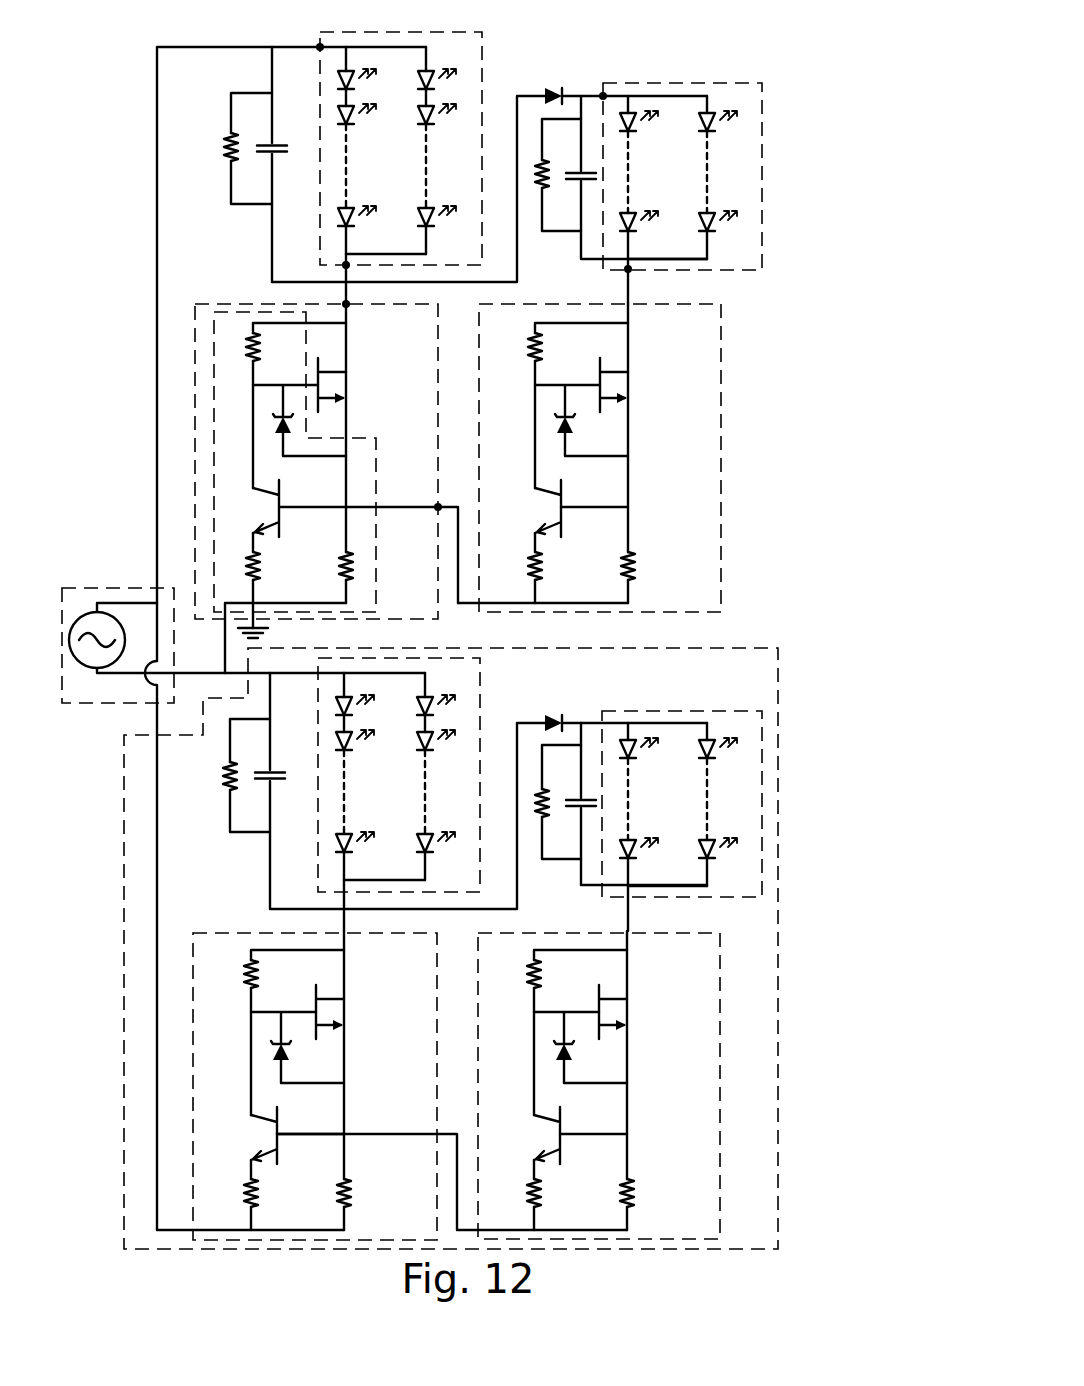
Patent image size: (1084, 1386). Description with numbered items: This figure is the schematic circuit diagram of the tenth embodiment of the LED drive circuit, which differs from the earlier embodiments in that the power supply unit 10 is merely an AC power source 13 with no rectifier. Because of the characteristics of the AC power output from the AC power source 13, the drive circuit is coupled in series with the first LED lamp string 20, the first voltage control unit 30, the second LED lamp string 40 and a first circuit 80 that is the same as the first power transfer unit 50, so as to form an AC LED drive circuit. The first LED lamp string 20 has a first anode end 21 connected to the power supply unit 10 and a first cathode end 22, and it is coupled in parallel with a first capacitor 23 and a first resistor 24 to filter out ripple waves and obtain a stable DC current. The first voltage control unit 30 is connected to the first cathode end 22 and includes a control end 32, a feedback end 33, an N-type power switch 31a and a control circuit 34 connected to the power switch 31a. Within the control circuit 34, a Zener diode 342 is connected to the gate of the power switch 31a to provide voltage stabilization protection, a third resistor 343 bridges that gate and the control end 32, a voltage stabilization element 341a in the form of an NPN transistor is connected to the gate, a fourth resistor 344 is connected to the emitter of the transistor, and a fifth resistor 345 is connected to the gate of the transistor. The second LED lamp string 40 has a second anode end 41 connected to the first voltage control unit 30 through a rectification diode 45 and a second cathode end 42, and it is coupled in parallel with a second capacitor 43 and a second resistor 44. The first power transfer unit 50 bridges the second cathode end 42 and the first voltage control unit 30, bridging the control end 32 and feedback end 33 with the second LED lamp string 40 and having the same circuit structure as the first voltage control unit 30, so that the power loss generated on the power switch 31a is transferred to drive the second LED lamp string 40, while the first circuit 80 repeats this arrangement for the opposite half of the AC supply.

The power supply unit 10 is at (70, 582).
The AC power source 13 is at (92, 667).
The first LED lamp string 20 is at (397, 24).
The first anode end 21 is at (318, 44).
The first cathode end 22 is at (350, 266).
The first capacitor 23 is at (274, 142).
The first resistor 24 is at (231, 166).
The first voltage control unit 30 is at (192, 323).
The power switch 31a is at (345, 383).
The control end 32 is at (340, 302).
The feedback end 33 is at (435, 510).
The control circuit 34 is at (212, 505).
The voltage stabilization element 341a is at (285, 500).
The Zener diode 342 is at (272, 440).
The third resistor 343 is at (242, 367).
The fourth resistor 344 is at (242, 566).
The fifth resistor 345 is at (352, 568).
The second LED lamp string 40 is at (706, 85).
The second anode end 41 is at (601, 92).
The second cathode end 42 is at (631, 271).
The second capacitor 43 is at (579, 182).
The second resistor 44 is at (542, 192).
The rectification diode 45 is at (553, 86).
The first power transfer unit 50 is at (720, 426).
The first circuit 80 is at (778, 941).